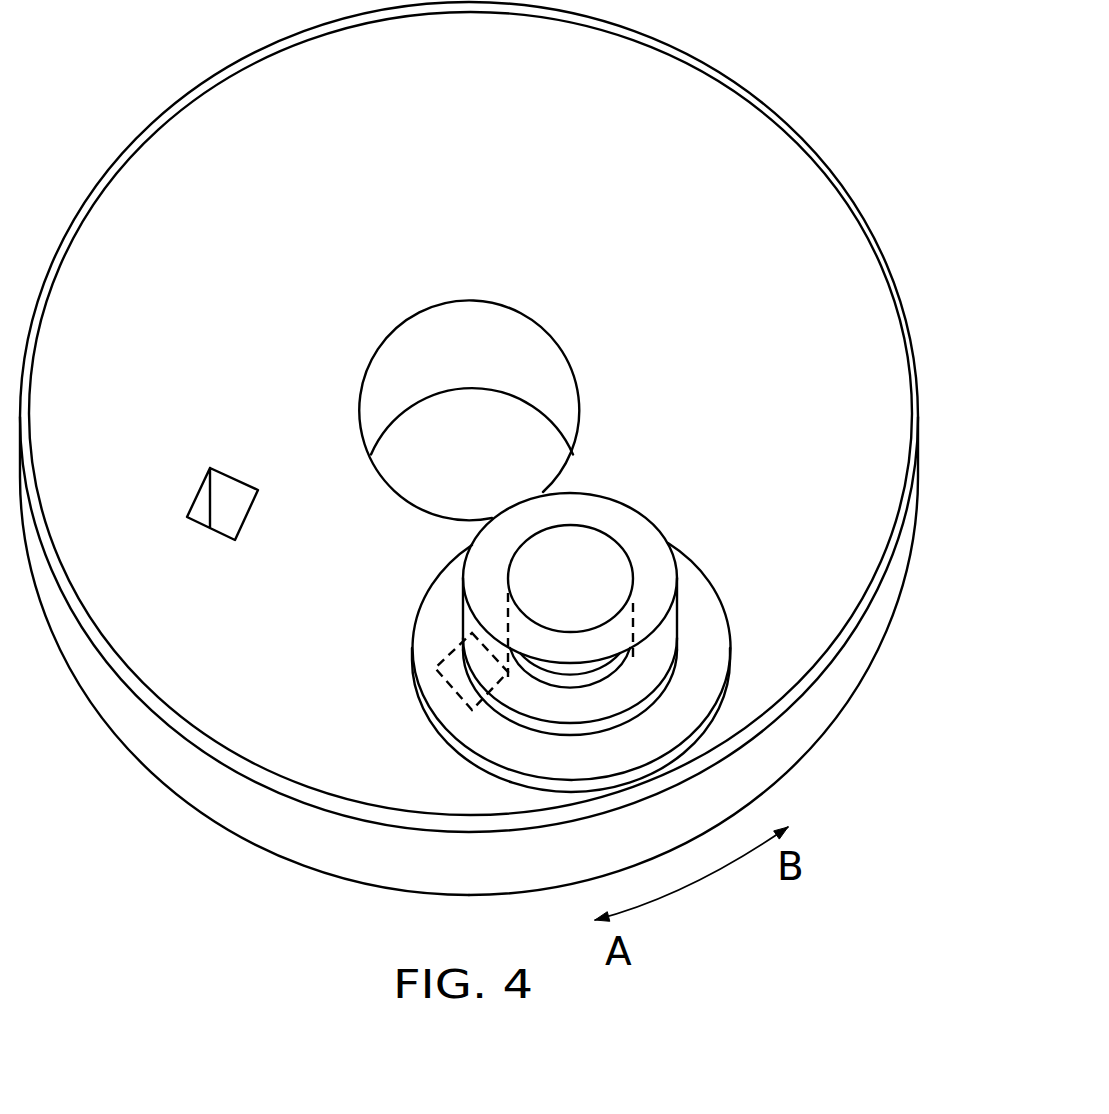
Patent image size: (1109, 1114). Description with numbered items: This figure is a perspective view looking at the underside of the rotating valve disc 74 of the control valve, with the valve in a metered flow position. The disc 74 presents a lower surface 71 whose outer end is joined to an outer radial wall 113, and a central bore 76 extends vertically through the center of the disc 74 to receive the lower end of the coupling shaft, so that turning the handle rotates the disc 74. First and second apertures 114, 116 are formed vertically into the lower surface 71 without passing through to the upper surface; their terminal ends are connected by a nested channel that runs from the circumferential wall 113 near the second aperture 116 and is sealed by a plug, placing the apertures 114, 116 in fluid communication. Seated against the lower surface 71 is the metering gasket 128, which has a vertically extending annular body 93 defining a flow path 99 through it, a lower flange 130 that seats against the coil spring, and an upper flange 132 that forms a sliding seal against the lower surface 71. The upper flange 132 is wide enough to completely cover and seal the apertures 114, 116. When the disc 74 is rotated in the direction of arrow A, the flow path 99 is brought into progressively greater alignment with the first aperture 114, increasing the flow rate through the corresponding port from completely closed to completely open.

The lower surface 71 is at (700, 62).
The valve disc 74 is at (852, 698).
The central bore 76 is at (434, 400).
The annular body 93 is at (636, 607).
The flow path 99 is at (565, 572).
The outer radial wall 113 is at (185, 797).
The first aperture 114 is at (437, 705).
The second aperture 116 is at (236, 477).
The gasket 128 is at (627, 493).
The lower flange 130 is at (632, 645).
The upper flange 132 is at (672, 553).